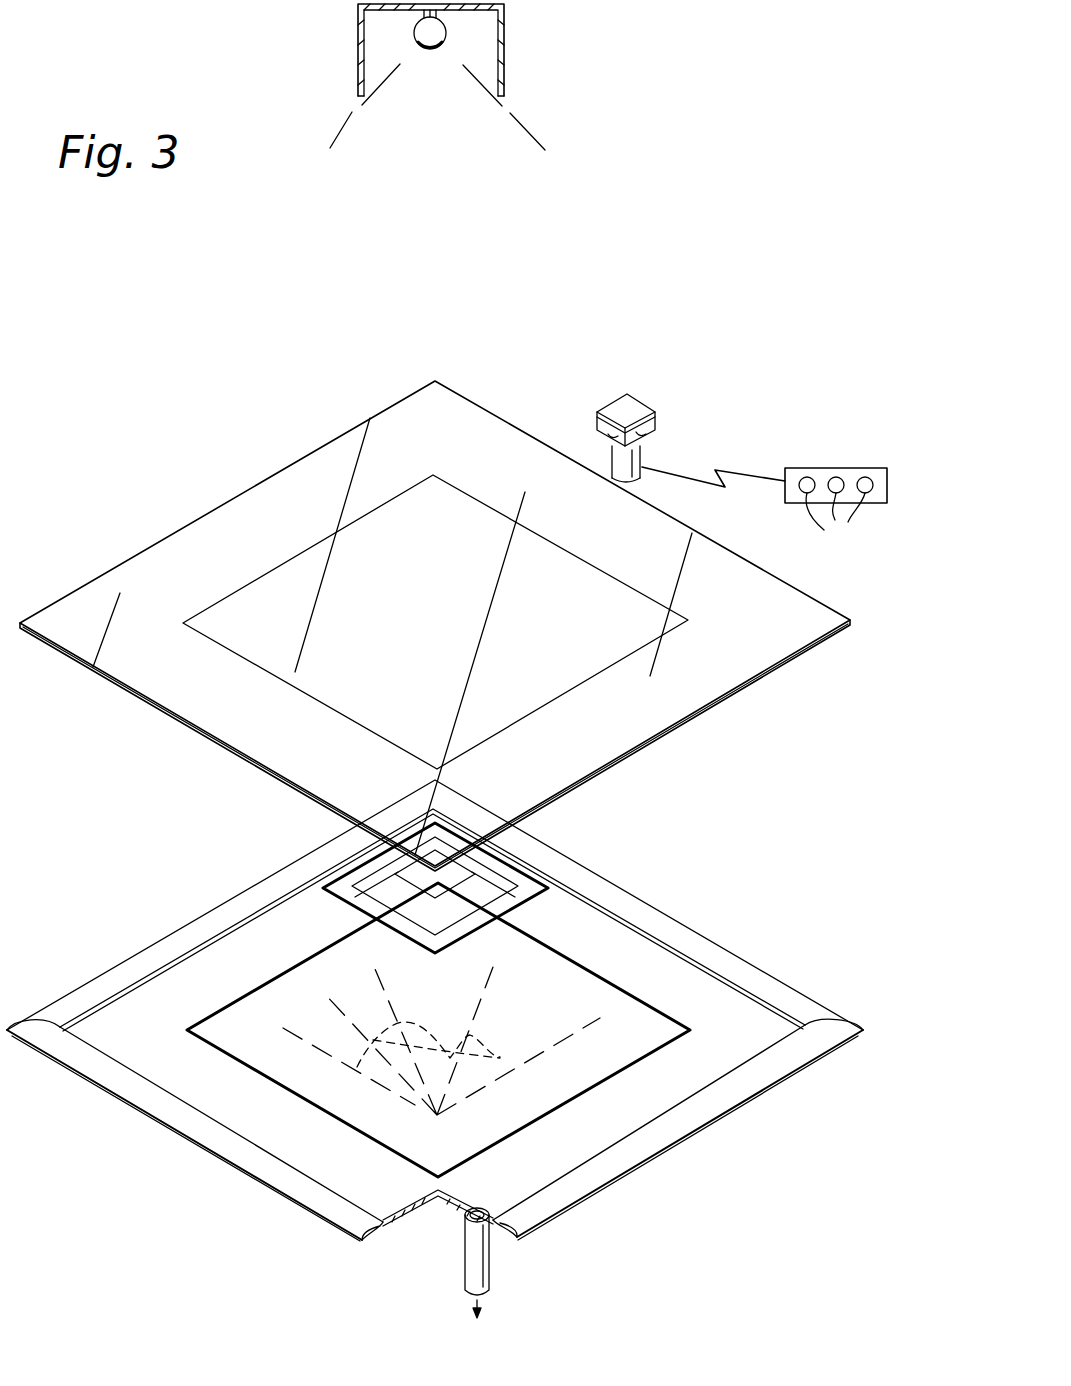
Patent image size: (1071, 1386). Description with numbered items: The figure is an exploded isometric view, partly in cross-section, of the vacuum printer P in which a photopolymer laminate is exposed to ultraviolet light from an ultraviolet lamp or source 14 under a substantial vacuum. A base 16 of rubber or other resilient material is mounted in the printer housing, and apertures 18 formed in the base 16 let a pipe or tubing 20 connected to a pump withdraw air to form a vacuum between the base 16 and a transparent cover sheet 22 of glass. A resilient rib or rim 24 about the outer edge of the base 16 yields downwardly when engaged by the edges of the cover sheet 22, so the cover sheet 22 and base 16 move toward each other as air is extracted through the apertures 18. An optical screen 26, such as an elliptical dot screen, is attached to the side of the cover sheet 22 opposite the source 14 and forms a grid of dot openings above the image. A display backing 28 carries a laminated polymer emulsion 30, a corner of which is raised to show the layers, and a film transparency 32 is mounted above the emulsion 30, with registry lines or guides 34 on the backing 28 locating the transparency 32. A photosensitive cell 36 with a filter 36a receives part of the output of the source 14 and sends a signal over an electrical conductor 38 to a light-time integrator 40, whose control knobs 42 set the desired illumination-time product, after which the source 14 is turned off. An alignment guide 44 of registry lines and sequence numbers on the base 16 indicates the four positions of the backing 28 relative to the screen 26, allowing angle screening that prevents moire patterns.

The ultraviolet lamp or source 14 is at (506, 48).
The printer P is at (578, 263).
The base 16 is at (748, 1003).
The apertures 18 is at (482, 1209).
The pipe or tubing 20 is at (490, 1268).
The transparent cover sheet 22 is at (165, 558).
The resilient rib or rim 24 is at (727, 1098).
The optical screen 26 is at (272, 570).
The display backing 28 is at (438, 946).
The polymer emulsion 30 is at (458, 940).
The film transparency 32 is at (470, 878).
The registry lines or guides 34 is at (373, 887).
The photosensitive cell 36 is at (657, 420).
The filter 36a is at (597, 424).
The electrical conductor 38 is at (677, 468).
The light-time integrator 40 is at (824, 466).
The control knobs 42 is at (835, 522).
The alignment guide 44 is at (438, 1030).